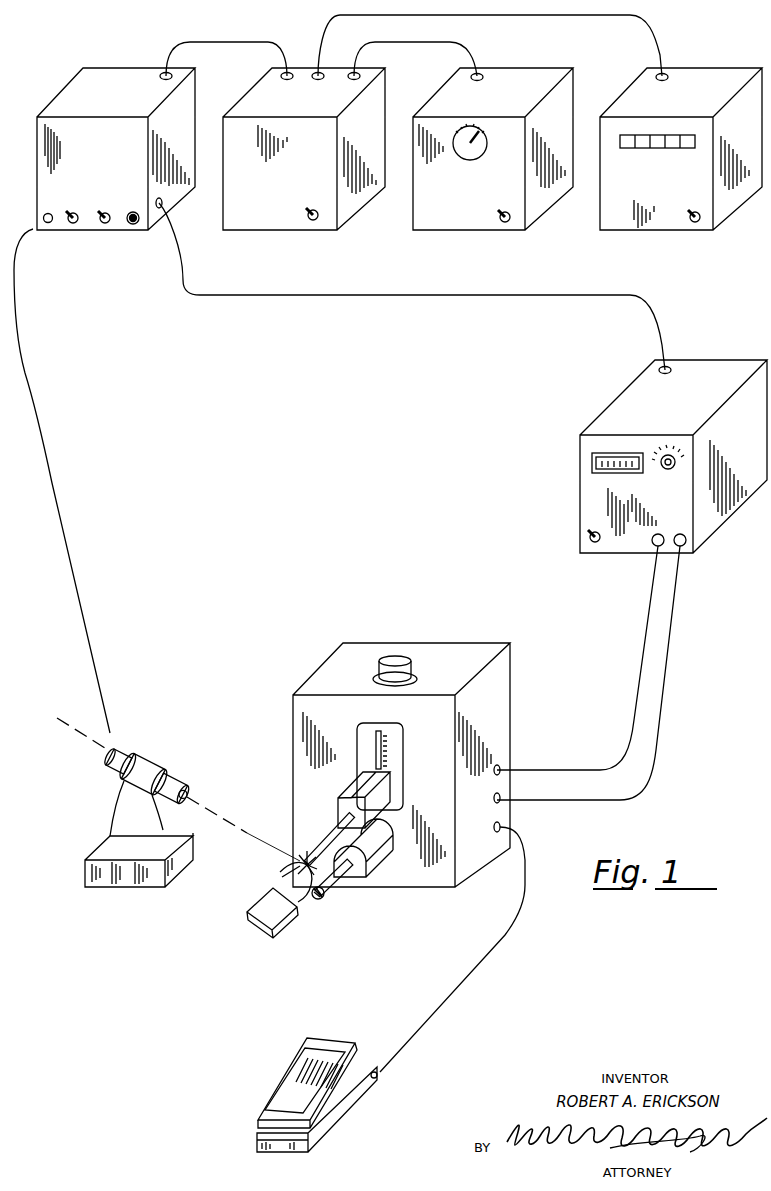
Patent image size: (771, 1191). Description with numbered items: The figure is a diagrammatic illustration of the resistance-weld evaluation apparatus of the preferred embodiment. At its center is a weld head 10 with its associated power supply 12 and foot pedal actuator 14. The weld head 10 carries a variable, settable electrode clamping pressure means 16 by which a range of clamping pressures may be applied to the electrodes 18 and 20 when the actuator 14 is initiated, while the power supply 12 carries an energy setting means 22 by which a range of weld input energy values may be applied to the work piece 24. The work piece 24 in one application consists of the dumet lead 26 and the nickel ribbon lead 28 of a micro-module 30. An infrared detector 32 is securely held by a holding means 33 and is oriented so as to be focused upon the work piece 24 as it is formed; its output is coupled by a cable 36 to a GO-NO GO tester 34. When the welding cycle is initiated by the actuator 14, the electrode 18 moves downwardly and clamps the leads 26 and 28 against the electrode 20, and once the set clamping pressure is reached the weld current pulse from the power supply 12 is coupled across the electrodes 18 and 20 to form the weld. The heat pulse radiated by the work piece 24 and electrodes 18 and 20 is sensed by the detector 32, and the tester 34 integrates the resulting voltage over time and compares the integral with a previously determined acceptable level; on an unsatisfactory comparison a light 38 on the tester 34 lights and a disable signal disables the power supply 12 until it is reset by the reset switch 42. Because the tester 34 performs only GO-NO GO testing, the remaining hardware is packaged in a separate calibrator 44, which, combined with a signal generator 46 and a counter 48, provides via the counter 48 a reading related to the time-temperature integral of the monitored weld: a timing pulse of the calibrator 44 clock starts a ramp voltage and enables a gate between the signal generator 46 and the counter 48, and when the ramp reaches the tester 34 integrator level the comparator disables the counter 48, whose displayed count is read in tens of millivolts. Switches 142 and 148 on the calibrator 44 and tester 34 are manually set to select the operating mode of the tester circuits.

The weld head 10 is at (480, 642).
The power supply 12 is at (720, 360).
The foot pedal actuator 14 is at (285, 1078).
The electrode clamping pressure means 16 is at (397, 658).
The electrode 18 is at (328, 832).
The electrode 20 is at (333, 893).
The energy setting means 22 is at (672, 468).
The work piece 24 is at (307, 863).
The dumet lead 26 is at (282, 877).
The nickel ribbon lead 28 is at (298, 902).
The micro-module 30 is at (257, 927).
The infrared detector 32 is at (130, 752).
The holding means 33 is at (120, 810).
The GO-NO GO tester 34 is at (117, 67).
The cable 36 is at (52, 483).
The light 38 is at (133, 226).
The reset switch 42 is at (72, 226).
The calibrator 44 is at (303, 66).
The signal generator 46 is at (525, 66).
The counter 48 is at (710, 66).
The switch 142 is at (315, 222).
The switch 148 is at (105, 226).